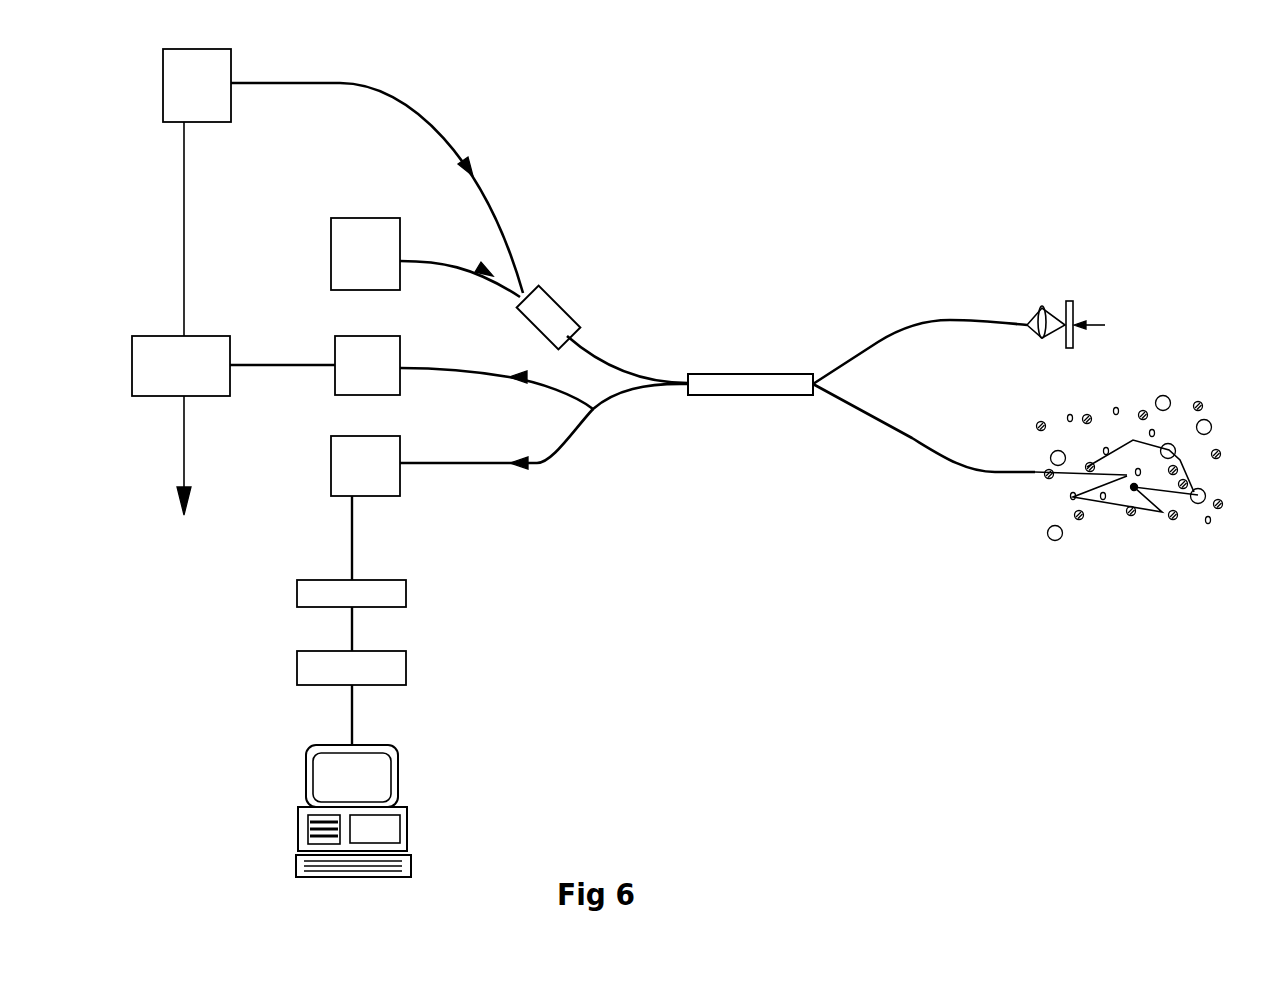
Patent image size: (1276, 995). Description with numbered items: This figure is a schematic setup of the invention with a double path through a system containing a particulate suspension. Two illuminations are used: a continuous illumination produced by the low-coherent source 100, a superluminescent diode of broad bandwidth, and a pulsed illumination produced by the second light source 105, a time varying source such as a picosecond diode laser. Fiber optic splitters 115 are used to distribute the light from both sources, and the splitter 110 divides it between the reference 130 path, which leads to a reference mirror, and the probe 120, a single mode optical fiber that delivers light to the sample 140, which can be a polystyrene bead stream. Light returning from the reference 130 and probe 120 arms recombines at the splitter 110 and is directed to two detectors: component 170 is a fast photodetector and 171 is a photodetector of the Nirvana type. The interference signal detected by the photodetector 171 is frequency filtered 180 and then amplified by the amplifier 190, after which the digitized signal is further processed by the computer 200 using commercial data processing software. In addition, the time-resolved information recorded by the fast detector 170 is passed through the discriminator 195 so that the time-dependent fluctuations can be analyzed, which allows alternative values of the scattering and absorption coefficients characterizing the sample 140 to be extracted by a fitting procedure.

The low-coherent source 100 is at (367, 218).
The second light source 105 is at (232, 57).
The splitter 110 is at (751, 372).
The fiber optic splitter 115 is at (561, 304).
The probe 120 is at (932, 447).
The reference 130 is at (897, 332).
The sample 140 is at (1225, 432).
The power detector 170 is at (459, 371).
The photodetector 171 is at (439, 452).
The frequency filter 180 is at (297, 590).
The amplifier 190 is at (297, 662).
The discriminator 195 is at (186, 425).
The computer 200 is at (400, 766).